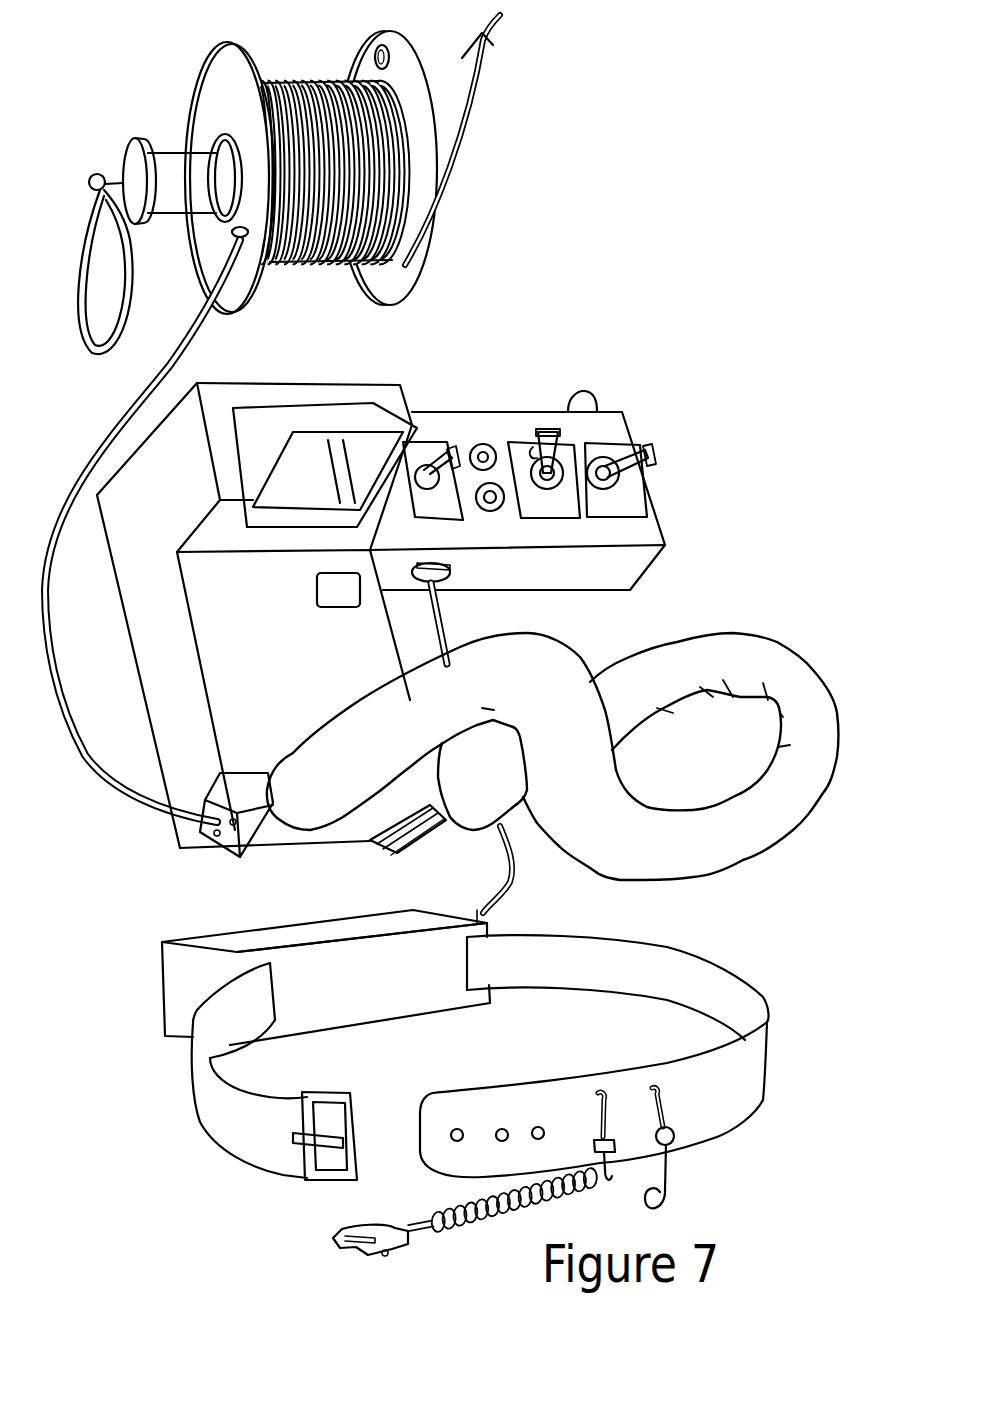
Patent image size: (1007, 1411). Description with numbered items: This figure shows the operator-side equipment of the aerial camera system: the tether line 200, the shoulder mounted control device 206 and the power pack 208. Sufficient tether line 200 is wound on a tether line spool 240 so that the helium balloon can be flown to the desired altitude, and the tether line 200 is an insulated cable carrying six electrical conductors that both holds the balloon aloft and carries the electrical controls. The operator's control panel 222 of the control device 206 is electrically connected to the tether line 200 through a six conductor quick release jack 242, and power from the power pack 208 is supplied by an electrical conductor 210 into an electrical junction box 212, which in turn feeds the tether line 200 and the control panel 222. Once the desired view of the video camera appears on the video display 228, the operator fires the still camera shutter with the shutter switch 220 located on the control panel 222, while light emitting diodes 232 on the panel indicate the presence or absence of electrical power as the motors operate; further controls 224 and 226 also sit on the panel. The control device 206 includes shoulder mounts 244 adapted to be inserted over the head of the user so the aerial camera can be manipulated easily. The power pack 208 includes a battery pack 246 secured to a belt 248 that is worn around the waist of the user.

The tether line 200 is at (122, 790).
The control device 206 is at (667, 507).
The power pack 208 is at (480, 1083).
The electrical conductor 210 is at (500, 895).
The electrical junction box 212 is at (203, 790).
The shutter switch 220 is at (583, 391).
The electrical control panel 222 is at (617, 423).
The left-right switch 224 is at (650, 452).
The toggle switch 226 is at (546, 430).
The video display 228 is at (303, 447).
The light emitting diodes 232 is at (495, 483).
The tether line spool 240 is at (402, 285).
The six electrical conductor quick release jack 242 is at (203, 850).
The shoulder mounts 244 is at (750, 657).
The battery pack 246 is at (326, 977).
The belt 248 is at (690, 970).